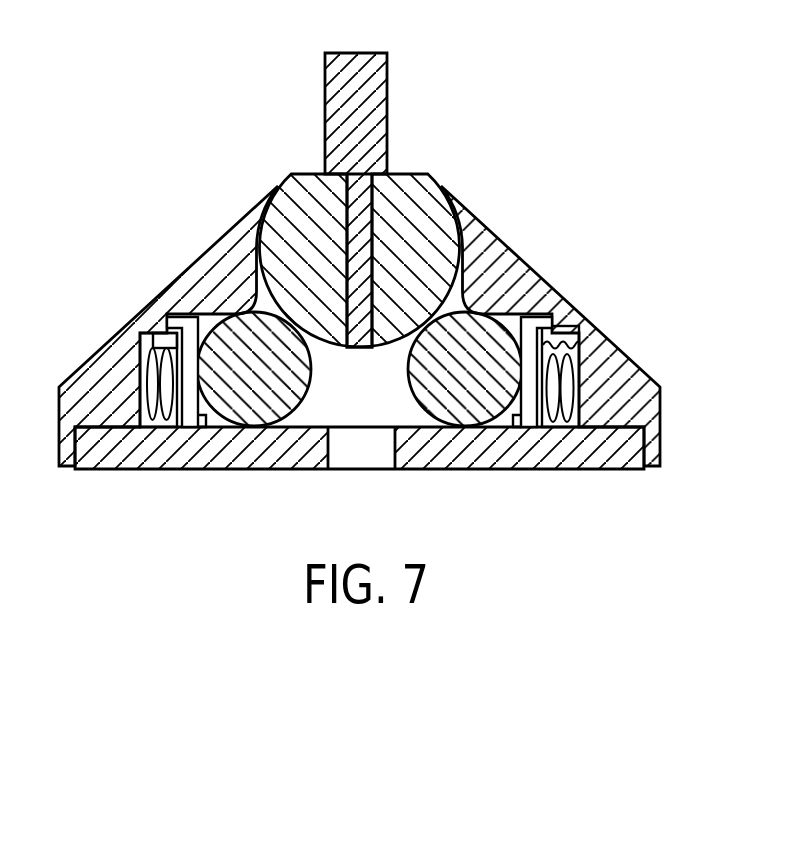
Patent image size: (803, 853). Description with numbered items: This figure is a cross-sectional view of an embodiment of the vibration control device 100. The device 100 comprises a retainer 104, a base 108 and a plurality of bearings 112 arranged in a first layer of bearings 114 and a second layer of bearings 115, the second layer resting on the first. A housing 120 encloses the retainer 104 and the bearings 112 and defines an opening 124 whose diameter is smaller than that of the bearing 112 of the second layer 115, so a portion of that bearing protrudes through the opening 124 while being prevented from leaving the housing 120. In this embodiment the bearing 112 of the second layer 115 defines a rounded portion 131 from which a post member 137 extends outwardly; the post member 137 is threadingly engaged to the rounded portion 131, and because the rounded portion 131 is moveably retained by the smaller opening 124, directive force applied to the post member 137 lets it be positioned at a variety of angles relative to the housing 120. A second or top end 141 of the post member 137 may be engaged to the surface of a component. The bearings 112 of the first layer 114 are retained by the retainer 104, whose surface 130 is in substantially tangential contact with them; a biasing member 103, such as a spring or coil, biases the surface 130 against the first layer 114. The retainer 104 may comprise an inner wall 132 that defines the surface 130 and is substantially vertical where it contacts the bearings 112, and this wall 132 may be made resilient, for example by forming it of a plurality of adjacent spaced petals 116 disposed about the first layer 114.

The device 100 is at (585, 130).
The biasing member 103 is at (147, 370).
The retainer 104 is at (157, 334).
The base 108 is at (588, 470).
The bearings 112 is at (300, 181).
The first layer of bearings 114 is at (530, 361).
The second layer of bearings 115 is at (464, 248).
The petals 116 is at (533, 422).
The housing 120 is at (590, 330).
The opening 124 is at (438, 178).
The surface 130 is at (211, 418).
The rounded portion 131 is at (461, 224).
The inner wall 132 is at (182, 418).
The post member 137 is at (388, 81).
The top end 141 is at (361, 57).